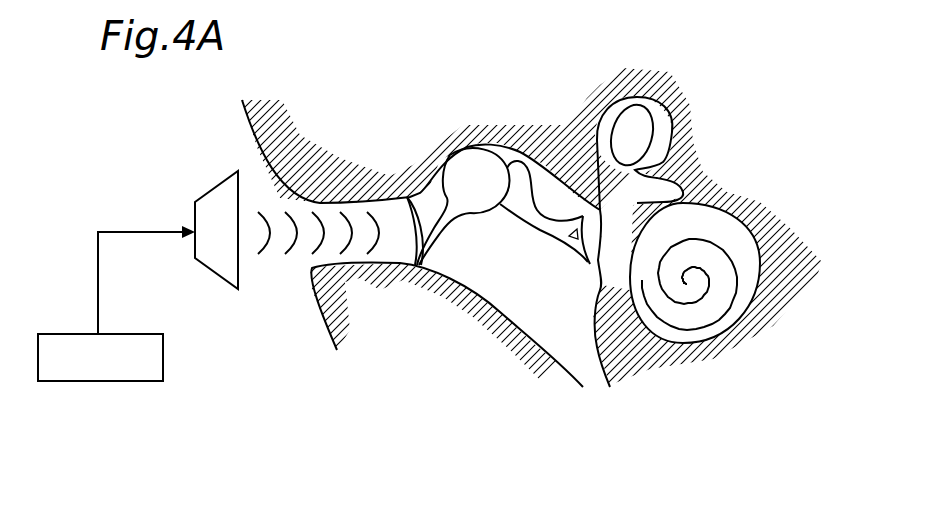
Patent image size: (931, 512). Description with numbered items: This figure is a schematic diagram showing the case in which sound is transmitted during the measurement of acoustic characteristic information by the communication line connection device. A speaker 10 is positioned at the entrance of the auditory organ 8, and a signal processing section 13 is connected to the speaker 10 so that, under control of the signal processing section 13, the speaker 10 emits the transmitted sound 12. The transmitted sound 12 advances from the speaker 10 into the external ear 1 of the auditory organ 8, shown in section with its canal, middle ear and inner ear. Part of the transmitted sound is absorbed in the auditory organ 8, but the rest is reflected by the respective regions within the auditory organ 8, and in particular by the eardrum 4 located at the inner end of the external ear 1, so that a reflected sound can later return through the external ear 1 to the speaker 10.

The external ear 1 is at (368, 285).
The eardrum 4 is at (414, 262).
The auditory organ 8 is at (243, 407).
The speaker 10 is at (220, 187).
The transmitted sound 12 is at (391, 175).
The signal processing section 13 is at (163, 358).